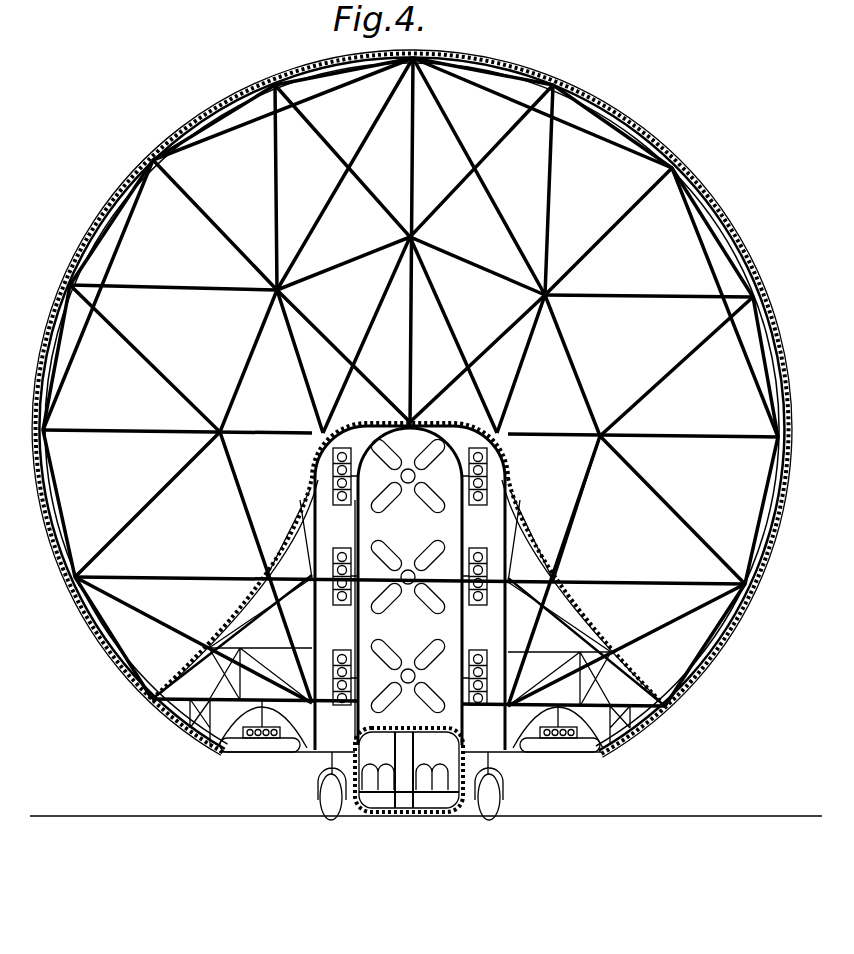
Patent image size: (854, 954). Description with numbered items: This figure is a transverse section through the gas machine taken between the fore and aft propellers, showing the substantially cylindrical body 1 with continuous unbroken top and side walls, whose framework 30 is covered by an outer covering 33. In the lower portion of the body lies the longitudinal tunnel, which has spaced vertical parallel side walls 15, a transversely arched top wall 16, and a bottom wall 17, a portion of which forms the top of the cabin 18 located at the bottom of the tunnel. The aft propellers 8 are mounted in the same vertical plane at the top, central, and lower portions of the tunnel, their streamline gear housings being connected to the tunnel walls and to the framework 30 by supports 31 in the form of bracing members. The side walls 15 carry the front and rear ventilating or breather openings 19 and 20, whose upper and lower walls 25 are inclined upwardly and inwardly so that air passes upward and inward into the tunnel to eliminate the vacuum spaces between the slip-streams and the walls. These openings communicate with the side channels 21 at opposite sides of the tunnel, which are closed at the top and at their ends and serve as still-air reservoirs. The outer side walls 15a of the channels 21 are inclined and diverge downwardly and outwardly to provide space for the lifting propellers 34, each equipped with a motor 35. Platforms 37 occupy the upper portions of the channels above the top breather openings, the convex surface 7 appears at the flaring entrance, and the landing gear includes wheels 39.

The body of the machine 1 is at (185, 132).
The convex surface 7 is at (600, 630).
The aft propellers 8 is at (400, 482).
The side walls 15 is at (453, 652).
The outer side walls of the channels 15a is at (537, 466).
The top wall 16 is at (436, 430).
The bottom wall 17 is at (390, 728).
The cabin 18 is at (383, 813).
The front ventilating or breather openings 19 is at (357, 540).
The rear ventilating or breather openings 20 is at (463, 637).
The side channels 21 is at (540, 509).
The upper and lower walls of the openings 25 is at (297, 450).
The framework 30 is at (574, 530).
The supports 31 is at (447, 537).
The outer covering 33 is at (694, 690).
The lifting propellers 34 is at (270, 753).
The motor 35 is at (236, 752).
The platforms 37 is at (333, 527).
The wheels 39 is at (320, 808).